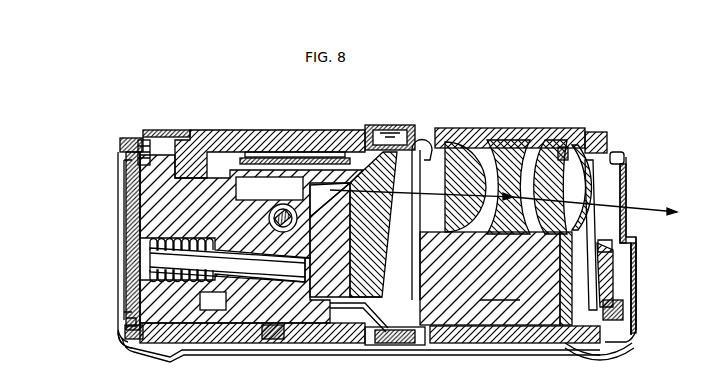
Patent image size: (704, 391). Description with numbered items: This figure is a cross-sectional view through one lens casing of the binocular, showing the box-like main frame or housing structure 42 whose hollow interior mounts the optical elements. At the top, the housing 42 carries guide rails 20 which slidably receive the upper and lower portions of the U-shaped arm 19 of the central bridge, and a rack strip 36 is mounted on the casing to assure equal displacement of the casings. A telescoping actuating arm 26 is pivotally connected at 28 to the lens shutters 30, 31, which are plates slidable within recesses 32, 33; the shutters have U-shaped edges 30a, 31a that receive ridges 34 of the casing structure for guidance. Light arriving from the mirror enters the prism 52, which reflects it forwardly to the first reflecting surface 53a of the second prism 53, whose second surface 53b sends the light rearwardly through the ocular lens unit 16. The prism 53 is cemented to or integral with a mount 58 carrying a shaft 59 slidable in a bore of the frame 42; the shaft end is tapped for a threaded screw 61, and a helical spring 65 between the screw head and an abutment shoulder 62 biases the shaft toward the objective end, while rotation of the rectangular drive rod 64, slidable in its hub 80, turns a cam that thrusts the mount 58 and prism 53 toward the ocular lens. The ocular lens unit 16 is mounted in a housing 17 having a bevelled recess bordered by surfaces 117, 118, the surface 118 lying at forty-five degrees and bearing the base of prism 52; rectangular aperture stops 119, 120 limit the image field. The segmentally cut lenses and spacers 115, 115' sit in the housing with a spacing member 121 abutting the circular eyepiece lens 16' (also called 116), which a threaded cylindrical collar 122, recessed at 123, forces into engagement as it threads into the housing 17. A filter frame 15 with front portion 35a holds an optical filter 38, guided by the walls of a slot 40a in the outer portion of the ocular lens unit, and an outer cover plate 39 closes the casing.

The filter frame 15 is at (640, 268).
The ocular lens unit 16 is at (553, 125).
The eyepiece lens 16' is at (577, 169).
The housing 17 is at (480, 128).
The arm 19 is at (206, 131).
The guide rails 20 is at (178, 131).
The telescoping actuating arm 26 is at (315, 150).
The pivotal connection 28 is at (142, 147).
The lens shutter 30 is at (120, 185).
The U-shaped edge 30a is at (128, 148).
The lens shutter 31 is at (626, 178).
The U-shaped edge 31a is at (622, 154).
The recess 32 is at (130, 322).
The recess 33 is at (627, 318).
The ridges 34 is at (127, 163).
The front portion of filter frame 35a is at (604, 254).
The rack strip 36 is at (290, 158).
The optical filter 38 is at (572, 210).
The outer cover plate 39 is at (382, 346).
The slot 40a is at (603, 353).
The main frame or housing structure 42 is at (153, 208).
The prism 52 is at (455, 273).
The second prism 53 is at (338, 300).
The first reflecting surface 53a is at (365, 298).
The second reflecting surface 53b is at (378, 215).
The mount 58 is at (300, 357).
The shaft 59 is at (227, 265).
The threaded screw 61 is at (150, 246).
The abutment shoulder 62 is at (213, 301).
The rectangular-shaped drive rod 64 is at (283, 204).
The helical spring 65 is at (150, 278).
The hub 80 is at (269, 188).
The spacer 115 is at (508, 169).
The spacer 115' is at (544, 172).
The circular eyepiece lens 116 is at (540, 318).
The surface 117 is at (470, 300).
The bearing surface 118 is at (520, 300).
The rectangular aperture stop 119 is at (369, 317).
The rectangular aperture stop 120 is at (418, 140).
The spacing member 121 is at (565, 312).
The threaded cylindrical collar 122 is at (587, 134).
The recess 123 is at (598, 283).